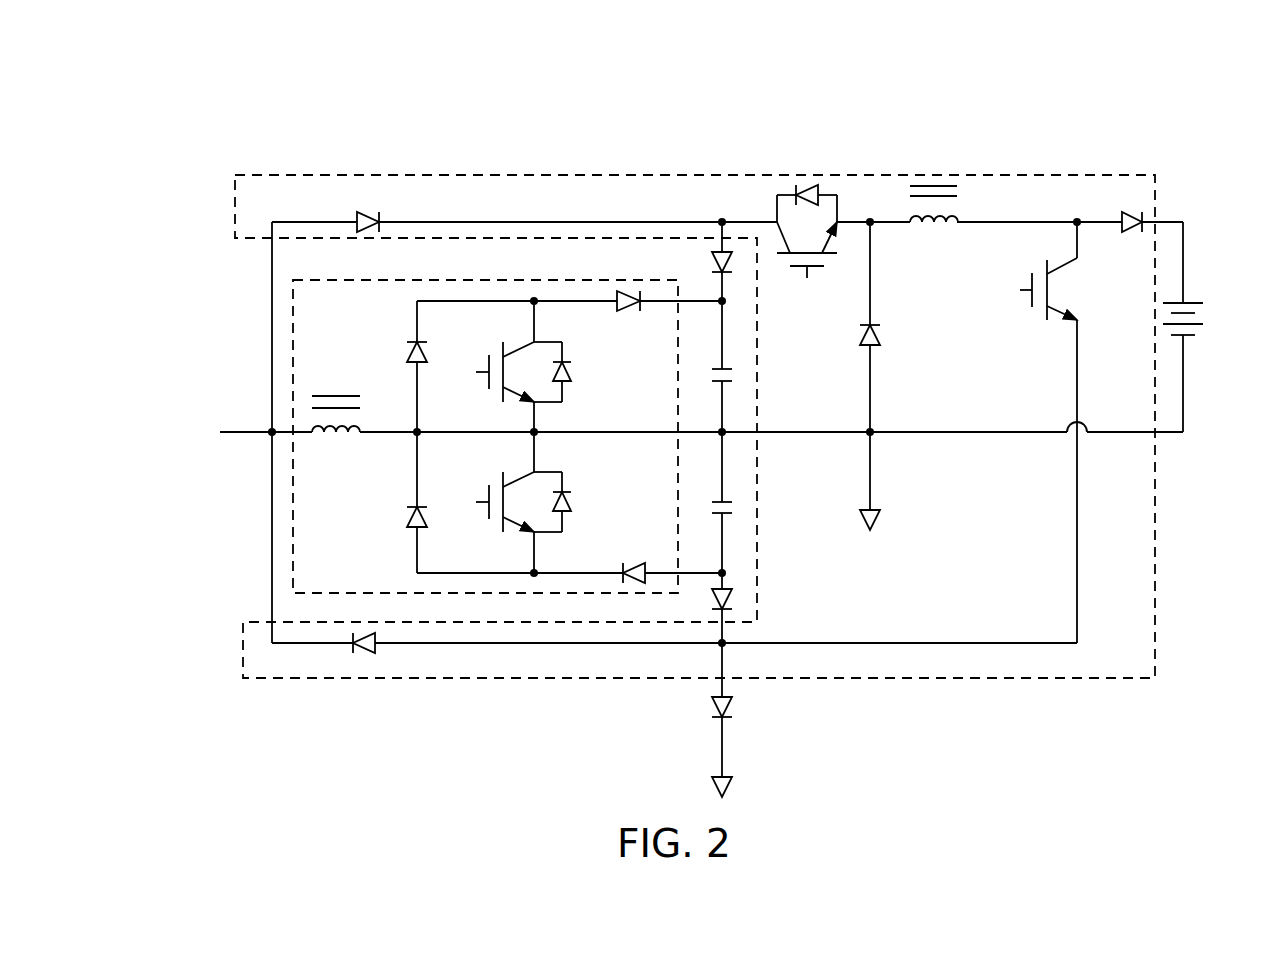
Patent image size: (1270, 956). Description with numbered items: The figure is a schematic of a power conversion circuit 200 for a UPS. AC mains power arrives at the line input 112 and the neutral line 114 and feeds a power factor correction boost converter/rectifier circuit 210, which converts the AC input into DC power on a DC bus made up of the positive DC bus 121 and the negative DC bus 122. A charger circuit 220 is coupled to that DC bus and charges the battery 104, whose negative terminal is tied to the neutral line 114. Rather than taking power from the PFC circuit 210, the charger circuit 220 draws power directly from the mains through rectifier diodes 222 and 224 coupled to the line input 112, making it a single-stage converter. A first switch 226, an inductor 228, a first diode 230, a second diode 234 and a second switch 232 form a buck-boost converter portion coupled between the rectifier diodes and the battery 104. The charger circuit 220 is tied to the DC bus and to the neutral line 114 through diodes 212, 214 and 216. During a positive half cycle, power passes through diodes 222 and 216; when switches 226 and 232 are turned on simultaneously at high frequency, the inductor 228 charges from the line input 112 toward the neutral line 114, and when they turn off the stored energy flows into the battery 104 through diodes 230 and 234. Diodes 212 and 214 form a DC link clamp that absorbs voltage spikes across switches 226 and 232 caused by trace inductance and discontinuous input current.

The power conversion circuit 200 is at (255, 148).
The power factor correction boost converter/rectifier circuit 210 is at (293, 295).
The charger circuit 220 is at (1085, 175).
The rectifier diode 222 is at (378, 222).
The rectifier diode 224 is at (353, 648).
The first switch 226 is at (813, 196).
The inductor 228 is at (935, 186).
The first diode 230 is at (871, 325).
The second switch 232 is at (1032, 296).
The second diode 234 is at (1142, 220).
The battery 104 is at (1193, 303).
The line input 112 is at (243, 432).
The neutral line 114 is at (872, 462).
The positive DC bus 121 is at (727, 303).
The negative DC bus 122 is at (727, 575).
The diode 212 is at (713, 270).
The diode 214 is at (727, 609).
The diode 216 is at (713, 717).